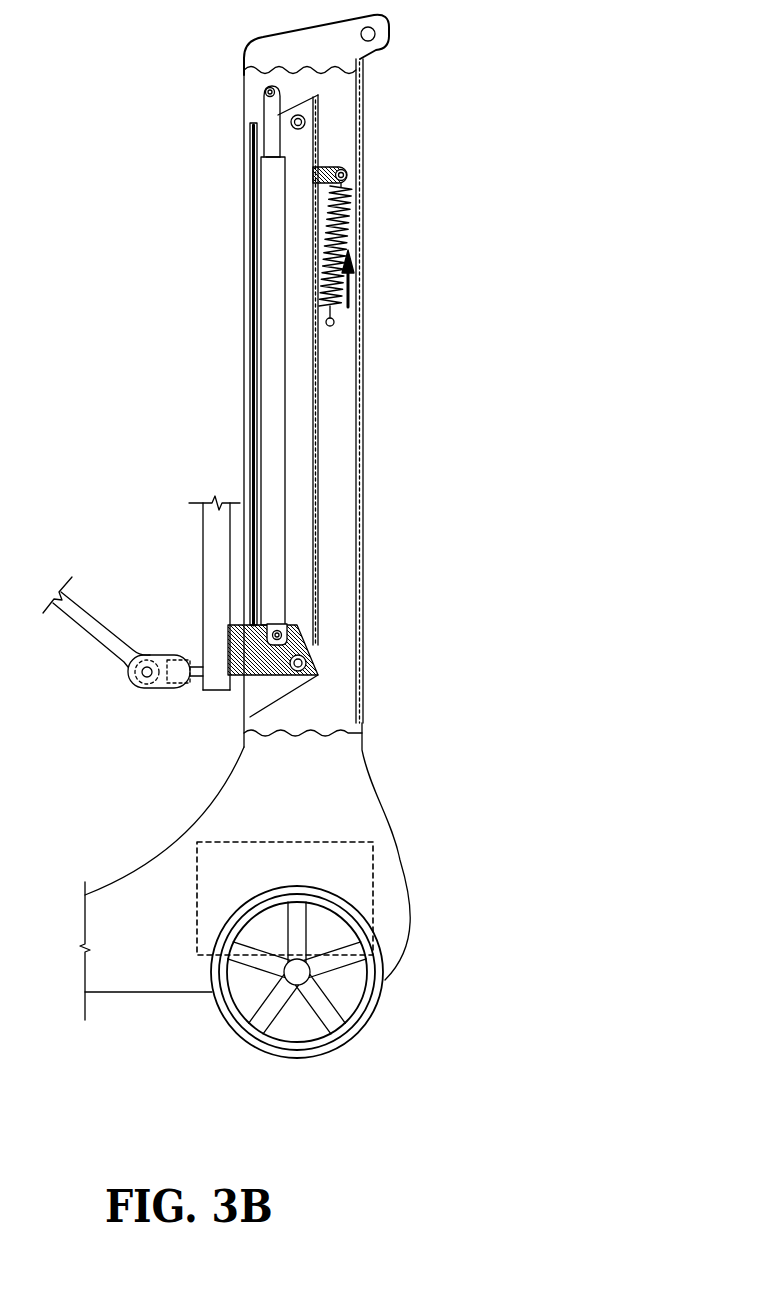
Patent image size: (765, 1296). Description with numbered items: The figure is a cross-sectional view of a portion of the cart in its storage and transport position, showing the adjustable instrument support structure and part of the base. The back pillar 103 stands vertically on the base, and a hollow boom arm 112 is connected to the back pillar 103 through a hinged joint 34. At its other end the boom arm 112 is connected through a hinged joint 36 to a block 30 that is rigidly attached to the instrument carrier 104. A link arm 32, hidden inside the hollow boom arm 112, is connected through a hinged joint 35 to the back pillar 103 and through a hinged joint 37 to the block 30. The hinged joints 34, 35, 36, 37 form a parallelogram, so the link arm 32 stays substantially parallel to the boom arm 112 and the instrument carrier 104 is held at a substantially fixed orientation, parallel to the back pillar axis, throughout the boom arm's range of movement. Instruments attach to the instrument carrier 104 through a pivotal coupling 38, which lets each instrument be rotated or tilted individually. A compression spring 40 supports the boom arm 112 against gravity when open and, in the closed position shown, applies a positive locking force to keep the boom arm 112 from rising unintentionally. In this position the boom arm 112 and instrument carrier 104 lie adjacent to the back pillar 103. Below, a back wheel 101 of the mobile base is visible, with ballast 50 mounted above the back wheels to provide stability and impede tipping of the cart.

The block 30 is at (243, 668).
The link arm 32 is at (268, 246).
The hinged joint 34 is at (305, 122).
The hinged joint 35 is at (263, 92).
The hinged joint 36 is at (302, 669).
The hinged joint 37 is at (279, 628).
The pivotal coupling 38 is at (147, 678).
The compression spring 40 is at (338, 212).
The ballast 50 is at (242, 882).
The back wheel 101 is at (368, 1010).
The back pillar 103 is at (361, 455).
The instrument carrier 104 is at (203, 555).
The hollow boom arm 112 is at (252, 395).